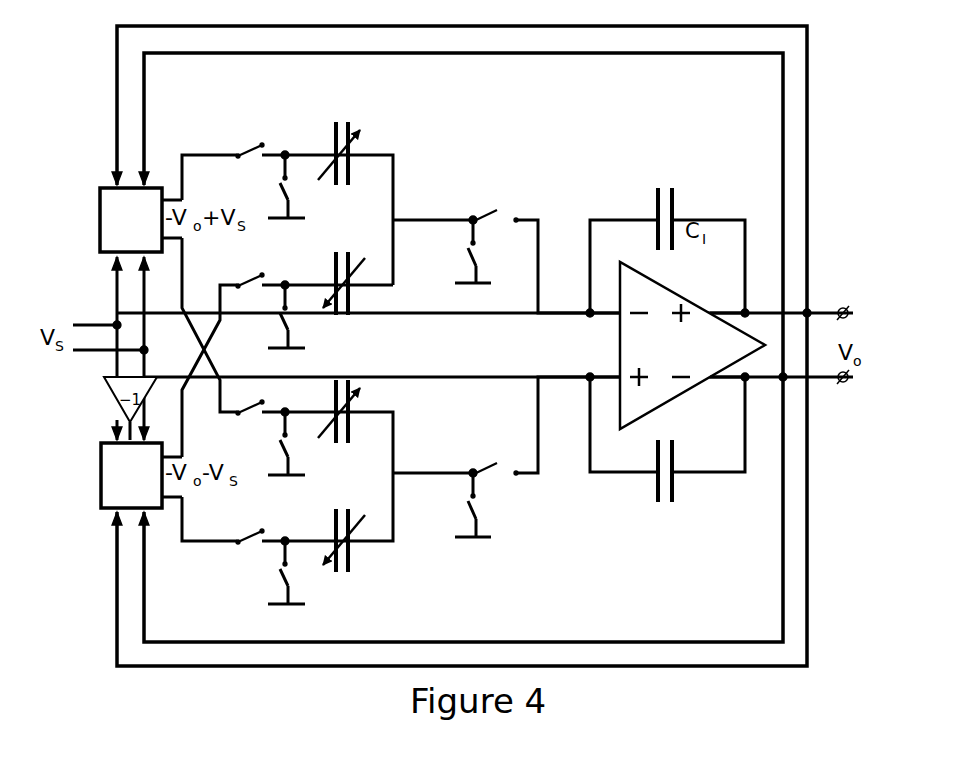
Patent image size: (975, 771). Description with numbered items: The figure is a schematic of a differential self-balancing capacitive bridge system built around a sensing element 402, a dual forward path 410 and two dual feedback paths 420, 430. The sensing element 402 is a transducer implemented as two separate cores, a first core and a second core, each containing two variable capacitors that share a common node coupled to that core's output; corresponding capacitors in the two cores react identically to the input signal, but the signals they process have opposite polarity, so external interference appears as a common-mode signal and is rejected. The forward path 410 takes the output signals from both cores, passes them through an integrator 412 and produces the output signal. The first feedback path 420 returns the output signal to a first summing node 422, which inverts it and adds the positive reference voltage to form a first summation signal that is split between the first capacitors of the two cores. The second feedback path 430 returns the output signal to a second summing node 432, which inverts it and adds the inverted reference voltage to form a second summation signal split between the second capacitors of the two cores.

The sensing element 402 is at (376, 340).
The dual forward path 410 is at (600, 160).
The integrator 412 is at (625, 495).
The first feedback path 420 is at (826, 162).
The first summing node 422 is at (101, 215).
The second feedback path 430 is at (826, 478).
The second summing node 432 is at (100, 467).